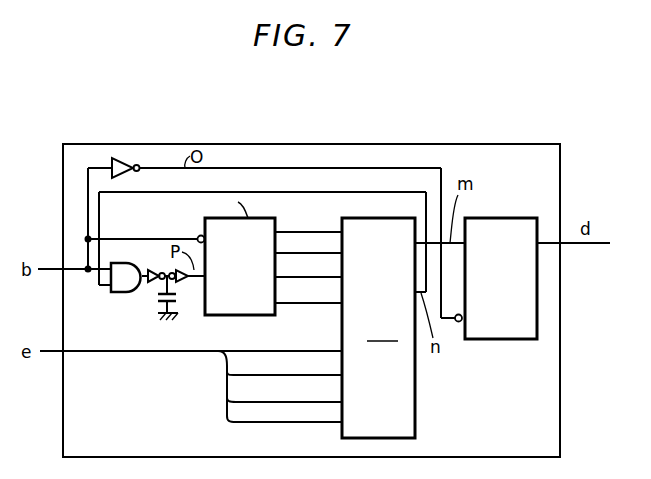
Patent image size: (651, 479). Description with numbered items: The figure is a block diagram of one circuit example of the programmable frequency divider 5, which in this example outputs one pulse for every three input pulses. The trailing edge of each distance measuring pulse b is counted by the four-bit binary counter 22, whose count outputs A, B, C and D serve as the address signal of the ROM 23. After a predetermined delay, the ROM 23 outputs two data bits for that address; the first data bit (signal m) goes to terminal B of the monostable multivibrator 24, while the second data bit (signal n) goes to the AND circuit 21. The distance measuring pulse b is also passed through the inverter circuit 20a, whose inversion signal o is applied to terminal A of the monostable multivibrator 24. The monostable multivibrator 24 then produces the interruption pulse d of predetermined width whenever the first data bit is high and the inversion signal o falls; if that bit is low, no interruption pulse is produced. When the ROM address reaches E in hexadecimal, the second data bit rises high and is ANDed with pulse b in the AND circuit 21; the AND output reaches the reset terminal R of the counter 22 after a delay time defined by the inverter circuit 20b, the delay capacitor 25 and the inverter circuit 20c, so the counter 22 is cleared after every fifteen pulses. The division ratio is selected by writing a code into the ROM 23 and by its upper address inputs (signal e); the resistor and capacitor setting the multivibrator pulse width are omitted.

The programmable frequency divider 5 is at (337, 144).
The inverter circuit 20a is at (119, 160).
The inverter circuit 20b is at (150, 284).
The inverter circuit 20c is at (180, 282).
The AND circuit 21 is at (119, 293).
The 4-bit binary counter 22 is at (269, 218).
The ROM 23 is at (390, 218).
The monostable multivibrator 24 is at (497, 218).
The delay capacitor 25 is at (158, 302).